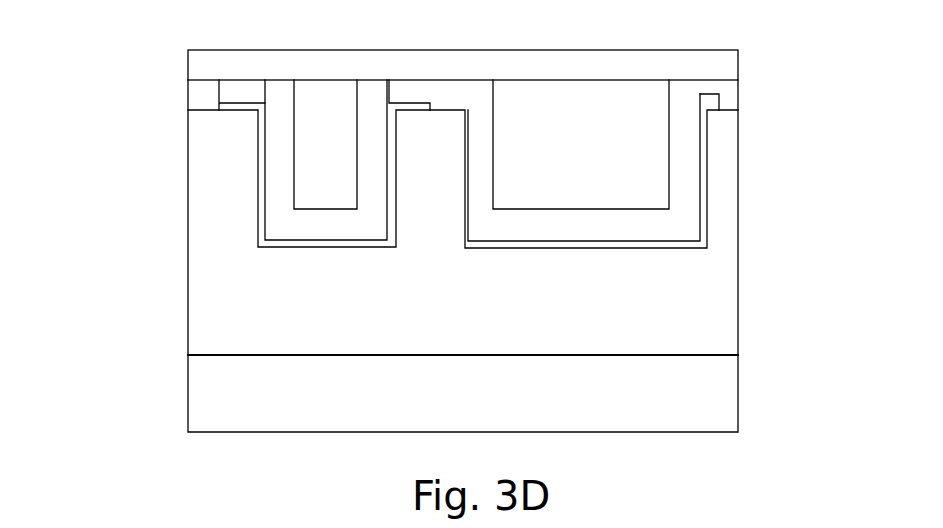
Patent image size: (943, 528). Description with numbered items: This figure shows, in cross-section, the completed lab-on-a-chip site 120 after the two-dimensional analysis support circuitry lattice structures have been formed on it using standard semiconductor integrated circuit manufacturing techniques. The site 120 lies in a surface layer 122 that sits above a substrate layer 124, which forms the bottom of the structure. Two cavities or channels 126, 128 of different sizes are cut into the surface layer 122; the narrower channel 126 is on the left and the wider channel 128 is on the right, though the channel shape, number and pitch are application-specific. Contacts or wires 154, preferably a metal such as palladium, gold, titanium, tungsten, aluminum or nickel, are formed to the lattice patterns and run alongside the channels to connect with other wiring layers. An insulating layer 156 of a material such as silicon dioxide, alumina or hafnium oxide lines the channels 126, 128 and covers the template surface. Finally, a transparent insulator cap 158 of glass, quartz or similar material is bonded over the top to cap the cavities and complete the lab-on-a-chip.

The lab-on-a-chip site 120 is at (758, 407).
The surface layer 122 is at (98, 236).
The substrate layer 124 is at (98, 388).
The channel 126 is at (308, 160).
The channel 128 is at (566, 160).
The contacts or wires 154 is at (257, 101).
The insulating layer 156 is at (98, 98).
The transparent insulator cap 158 is at (188, 62).